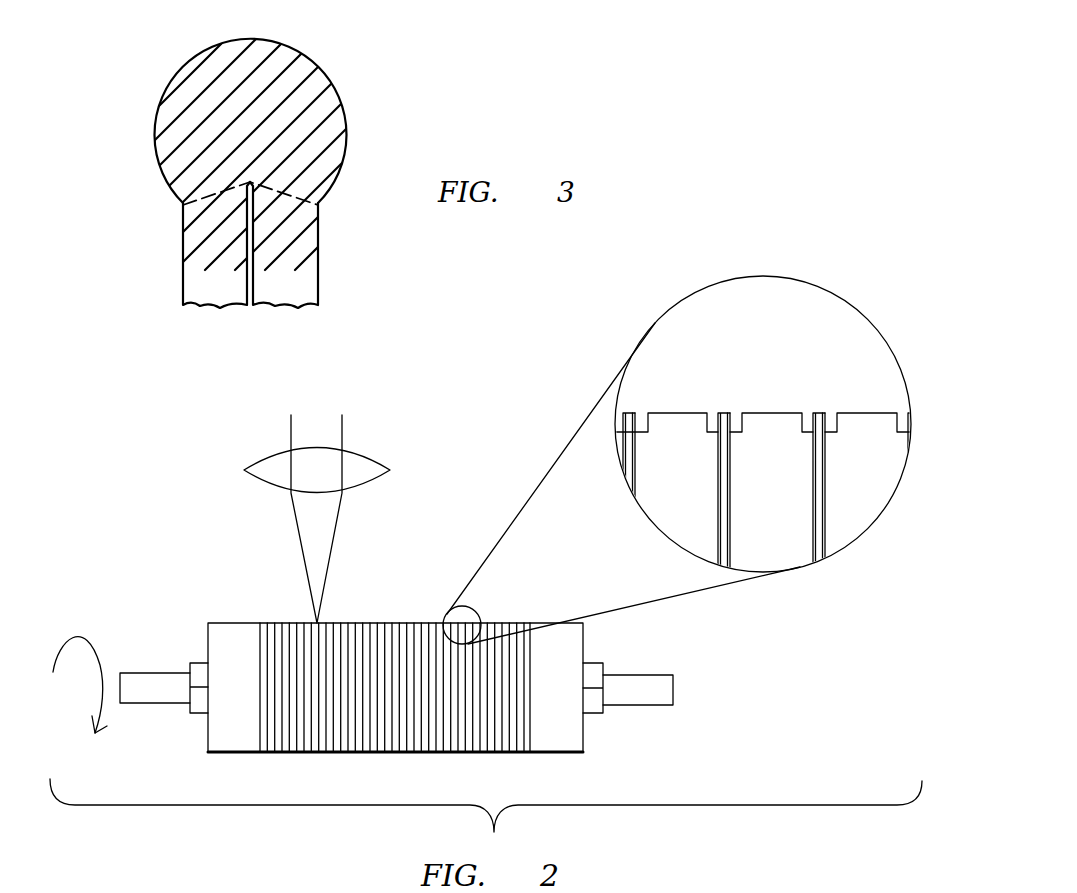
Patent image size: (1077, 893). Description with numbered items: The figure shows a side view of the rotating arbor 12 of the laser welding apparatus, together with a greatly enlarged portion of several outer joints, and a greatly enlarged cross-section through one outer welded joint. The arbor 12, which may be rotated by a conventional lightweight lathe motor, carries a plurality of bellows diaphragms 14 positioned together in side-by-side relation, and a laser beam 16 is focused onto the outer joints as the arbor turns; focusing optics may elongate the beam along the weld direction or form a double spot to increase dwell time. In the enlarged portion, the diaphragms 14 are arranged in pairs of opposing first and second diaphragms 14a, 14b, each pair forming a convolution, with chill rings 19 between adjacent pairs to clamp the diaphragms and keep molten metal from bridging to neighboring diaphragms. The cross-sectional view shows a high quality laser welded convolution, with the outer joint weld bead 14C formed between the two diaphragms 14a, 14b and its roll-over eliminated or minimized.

In FIG. 2, the arbor 12 is at (587, 647).
In FIG. 2, the bellows diaphragms 14 is at (313, 770).
In FIG. 3, the first diaphragm 14a is at (202, 280).
In FIG. 2, the first diaphragm 14a is at (623, 416).
In FIG. 3, the second diaphragm 14b is at (300, 287).
In FIG. 2, the second diaphragm 14b is at (633, 457).
In FIG. 3, the outer joint weld bead 14C is at (300, 72).
In FIG. 2, the laser beam 16 is at (332, 548).
In FIG. 2, the chill rings 19 is at (667, 491).